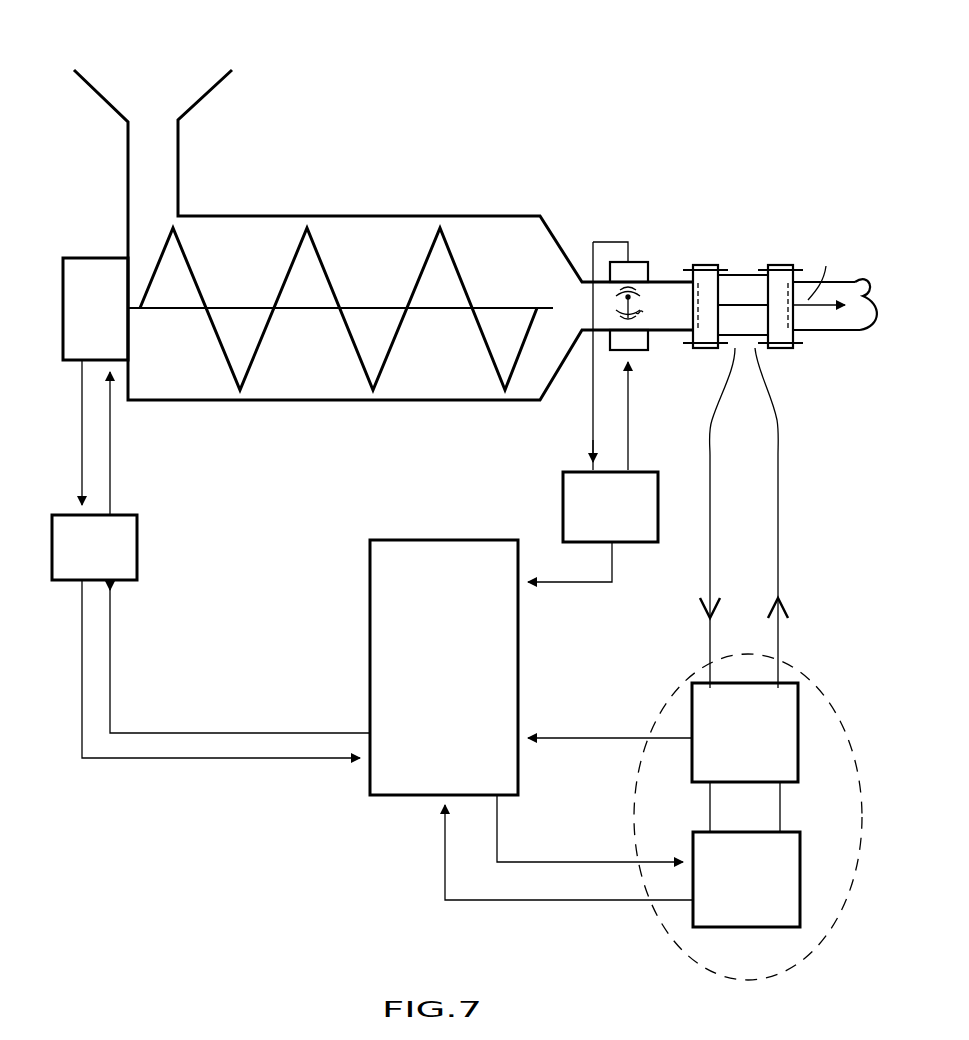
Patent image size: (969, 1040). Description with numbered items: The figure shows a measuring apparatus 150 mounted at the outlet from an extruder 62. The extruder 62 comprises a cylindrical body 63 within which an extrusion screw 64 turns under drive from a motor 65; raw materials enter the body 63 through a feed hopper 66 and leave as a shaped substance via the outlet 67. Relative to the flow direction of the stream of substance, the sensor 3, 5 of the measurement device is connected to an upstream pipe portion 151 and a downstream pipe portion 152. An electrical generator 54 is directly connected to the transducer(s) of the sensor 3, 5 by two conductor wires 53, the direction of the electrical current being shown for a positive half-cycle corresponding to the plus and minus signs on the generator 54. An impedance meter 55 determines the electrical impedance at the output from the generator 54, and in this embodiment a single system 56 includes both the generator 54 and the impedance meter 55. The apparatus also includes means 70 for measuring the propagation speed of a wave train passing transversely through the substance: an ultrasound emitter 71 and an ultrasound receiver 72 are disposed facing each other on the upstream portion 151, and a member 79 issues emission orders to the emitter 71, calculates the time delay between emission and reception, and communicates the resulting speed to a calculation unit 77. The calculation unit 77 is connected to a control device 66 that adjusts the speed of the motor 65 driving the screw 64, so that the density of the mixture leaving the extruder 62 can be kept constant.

The extruder 62 is at (383, 235).
The cylindrical body 63 is at (260, 215).
The extrusion screw 64 is at (453, 257).
The motor 65 is at (98, 272).
The feed hopper / control device 66 is at (153, 112).
The outlet 67 is at (583, 305).
The means for measuring the propagation speed 70 is at (643, 372).
The ultrasound emitter 71 is at (645, 338).
The ultrasound receiver 72 is at (636, 265).
The calculation unit 77 is at (393, 660).
The member for emitting and receiving the signal 79 is at (575, 507).
The measuring apparatus 150 is at (757, 265).
The upstream pipe portion 151 is at (667, 284).
The downstream pipe portion 152 is at (822, 322).
The sensor 3 is at (811, 259).
The sensor 5 is at (746, 256).
The conductor wires 53 is at (712, 534).
The electrical generator 54 is at (750, 905).
The impedance meter 55 is at (792, 734).
The single system 56 is at (664, 817).